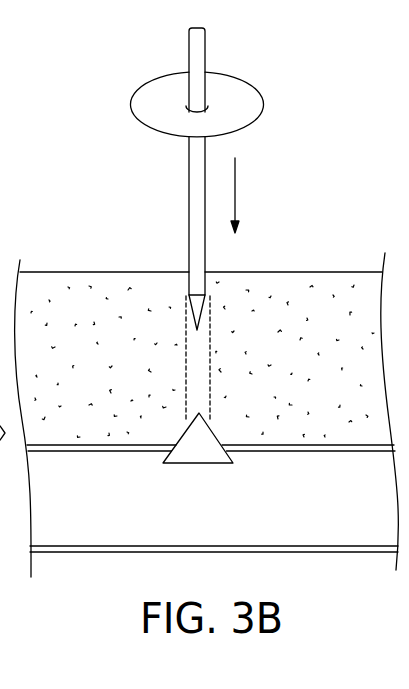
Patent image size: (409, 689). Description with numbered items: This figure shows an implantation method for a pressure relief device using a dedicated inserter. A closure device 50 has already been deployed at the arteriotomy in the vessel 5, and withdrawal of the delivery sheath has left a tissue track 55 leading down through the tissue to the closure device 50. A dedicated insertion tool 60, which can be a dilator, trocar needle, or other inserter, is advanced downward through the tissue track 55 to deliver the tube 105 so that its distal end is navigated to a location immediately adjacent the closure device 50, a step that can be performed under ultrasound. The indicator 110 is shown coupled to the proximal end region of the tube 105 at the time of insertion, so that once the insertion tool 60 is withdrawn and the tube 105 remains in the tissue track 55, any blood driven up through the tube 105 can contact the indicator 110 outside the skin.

The vessel 5 is at (300, 538).
The closure device 50 is at (172, 453).
The tissue track 55 is at (185, 347).
The insertion tool 60 is at (189, 34).
The tube 105 is at (189, 193).
The indicator 110 is at (131, 107).